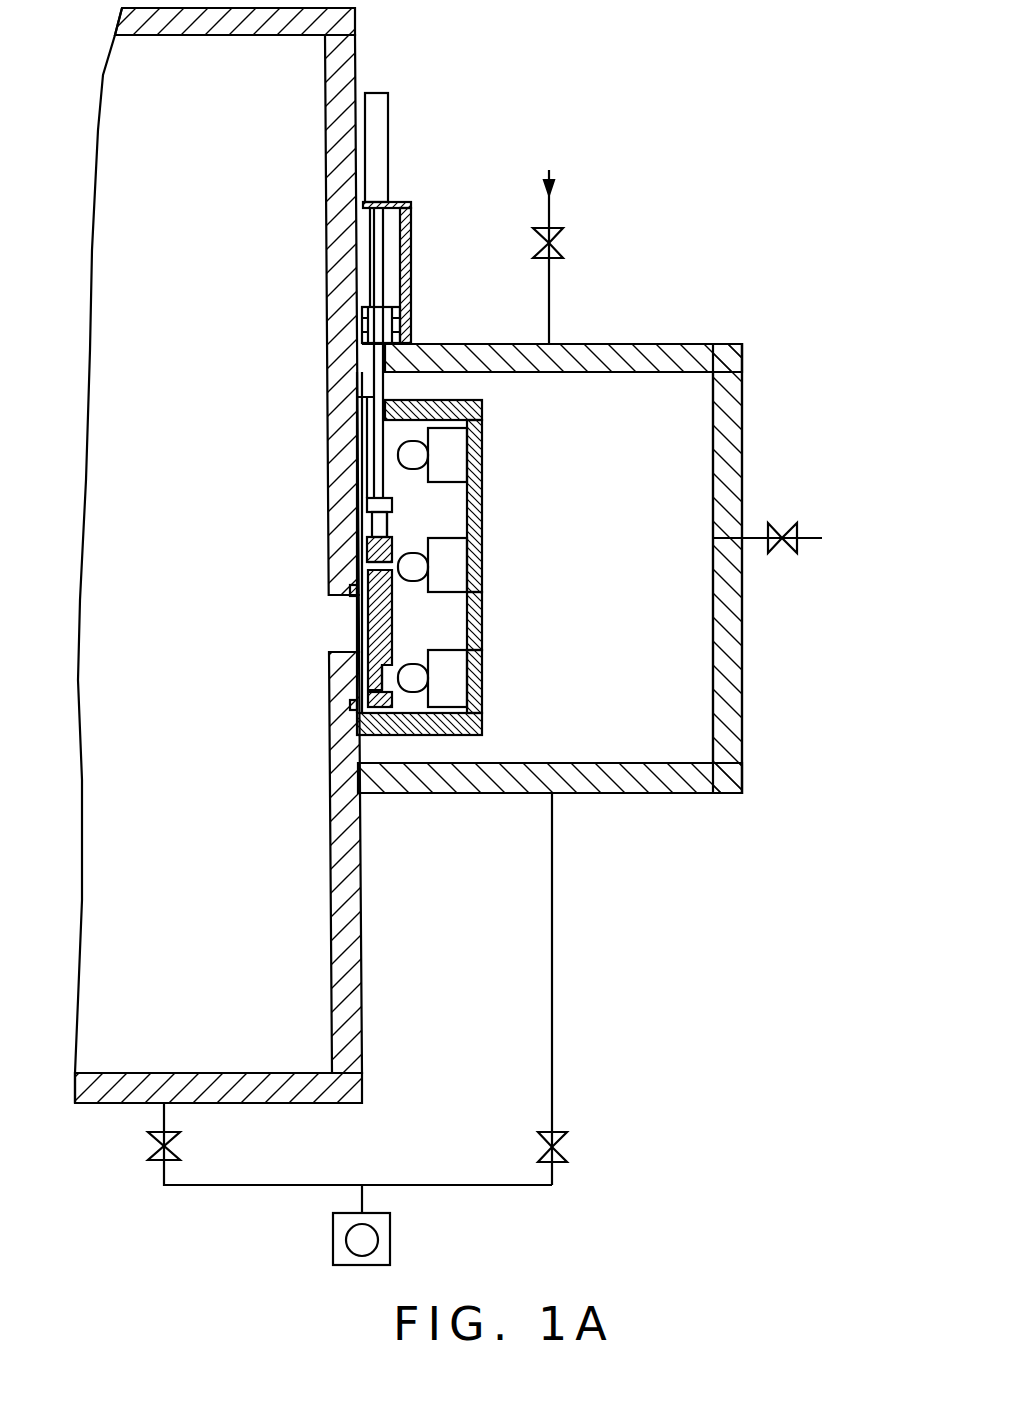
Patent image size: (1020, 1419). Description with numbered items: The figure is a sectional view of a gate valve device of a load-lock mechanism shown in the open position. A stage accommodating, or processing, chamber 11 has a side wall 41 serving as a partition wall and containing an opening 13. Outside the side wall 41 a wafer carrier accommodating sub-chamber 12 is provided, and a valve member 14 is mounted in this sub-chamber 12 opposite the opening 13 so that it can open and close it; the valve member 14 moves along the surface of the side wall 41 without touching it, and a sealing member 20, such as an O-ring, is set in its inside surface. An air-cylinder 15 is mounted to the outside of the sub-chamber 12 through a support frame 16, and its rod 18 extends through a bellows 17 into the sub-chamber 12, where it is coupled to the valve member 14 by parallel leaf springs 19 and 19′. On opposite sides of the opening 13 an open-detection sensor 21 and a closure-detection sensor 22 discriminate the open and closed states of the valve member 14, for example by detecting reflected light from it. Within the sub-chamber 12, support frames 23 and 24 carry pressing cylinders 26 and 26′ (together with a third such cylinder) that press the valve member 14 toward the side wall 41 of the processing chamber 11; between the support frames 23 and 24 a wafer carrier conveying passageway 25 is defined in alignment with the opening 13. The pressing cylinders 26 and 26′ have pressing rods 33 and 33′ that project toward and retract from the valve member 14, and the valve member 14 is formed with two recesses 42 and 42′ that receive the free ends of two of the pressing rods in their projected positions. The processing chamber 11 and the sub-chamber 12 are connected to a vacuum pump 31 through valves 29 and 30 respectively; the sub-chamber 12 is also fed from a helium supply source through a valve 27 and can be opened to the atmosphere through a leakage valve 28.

The stage accommodating chamber 11 is at (297, 1092).
The wafer carrier accommodating chamber 12 is at (692, 787).
The opening 13 is at (343, 621).
The valve member 14 is at (392, 625).
The air-cylinder 15 is at (381, 113).
The support frame 16 is at (410, 223).
The bellows 17 is at (403, 300).
The rod 18 is at (374, 432).
The parallel leaf spring 19 is at (372, 518).
The parallel leaf spring 19′ is at (393, 520).
The sealing member 20 is at (368, 562).
The open-detection sensor 21 is at (352, 590).
The closure-detection sensor 22 is at (352, 703).
The support frame 23 is at (472, 505).
The support frame 24 is at (482, 702).
The wafer carrier conveying passageway 25 is at (462, 605).
The pressing cylinder 26 is at (458, 437).
The pressing cylinder 26′ is at (453, 550).
The valve 27 is at (563, 240).
The leakage valve 28 is at (782, 527).
The valve 29 is at (150, 1140).
The valve 30 is at (568, 1140).
The vacuum pump 31 is at (392, 1222).
The pressing rod 33 is at (415, 455).
The pressing rod 33′ is at (417, 567).
The side wall 41 is at (340, 850).
The recess 42 is at (390, 562).
The recess 42′ is at (392, 680).